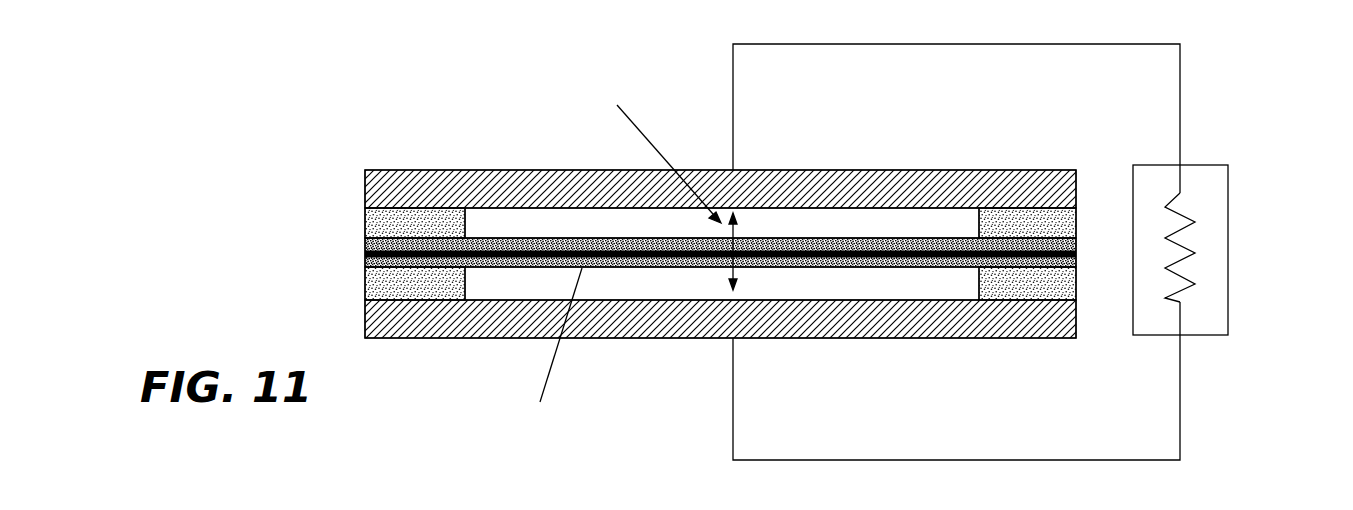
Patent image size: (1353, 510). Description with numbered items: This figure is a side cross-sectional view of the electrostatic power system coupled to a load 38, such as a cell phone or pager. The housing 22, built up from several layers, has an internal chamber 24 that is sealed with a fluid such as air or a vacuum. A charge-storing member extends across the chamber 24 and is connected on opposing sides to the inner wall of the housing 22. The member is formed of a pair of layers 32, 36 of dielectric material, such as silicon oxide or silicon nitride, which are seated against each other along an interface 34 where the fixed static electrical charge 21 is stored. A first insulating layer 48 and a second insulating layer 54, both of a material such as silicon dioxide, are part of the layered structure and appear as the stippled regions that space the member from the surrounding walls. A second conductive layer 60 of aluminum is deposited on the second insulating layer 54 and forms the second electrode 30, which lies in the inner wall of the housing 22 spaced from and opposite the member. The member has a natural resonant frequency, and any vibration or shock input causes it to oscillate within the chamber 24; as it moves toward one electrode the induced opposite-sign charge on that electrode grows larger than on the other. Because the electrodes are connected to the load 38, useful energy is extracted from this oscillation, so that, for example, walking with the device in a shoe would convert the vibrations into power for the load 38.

The stored static electrical charge 21 is at (782, 250).
The housing 22 is at (350, 195).
The chamber 24 is at (924, 218).
The second electrode 30 is at (1035, 185).
The layer of dielectric material 32 is at (447, 267).
The interface 34 is at (407, 248).
The layer of dielectric material 36 is at (448, 245).
The load 38 is at (1213, 250).
The first insulating layer 48 is at (366, 292).
The second insulating layer 54 is at (366, 218).
The second conductive layer 60 is at (843, 185).